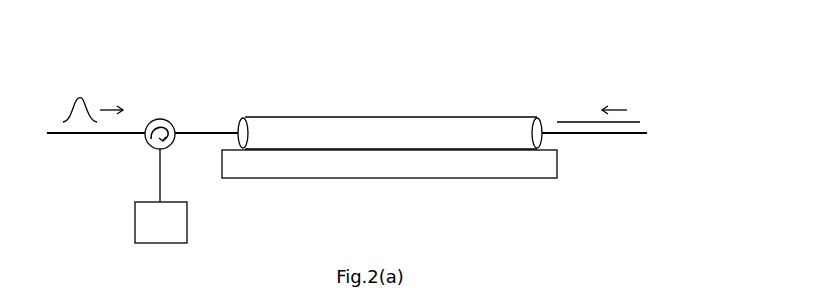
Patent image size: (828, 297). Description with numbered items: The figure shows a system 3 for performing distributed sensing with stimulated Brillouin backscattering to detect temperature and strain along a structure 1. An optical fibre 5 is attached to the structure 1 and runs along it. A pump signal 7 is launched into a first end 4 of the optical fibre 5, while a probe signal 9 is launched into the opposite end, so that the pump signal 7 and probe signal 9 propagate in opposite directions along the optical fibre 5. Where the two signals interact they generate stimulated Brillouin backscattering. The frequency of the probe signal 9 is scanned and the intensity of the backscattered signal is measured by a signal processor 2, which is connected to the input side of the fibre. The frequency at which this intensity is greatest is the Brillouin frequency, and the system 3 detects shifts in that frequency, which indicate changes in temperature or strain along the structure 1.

The structure 1 is at (285, 173).
The signal processor 2 is at (161, 222).
The system 3 is at (641, 63).
The first end 4 is at (241, 118).
The optical fibre 5 is at (383, 143).
The pump signal 7 is at (85, 93).
The probe signal 9 is at (568, 120).